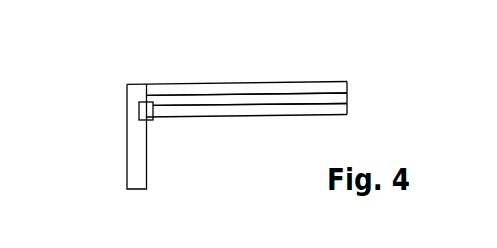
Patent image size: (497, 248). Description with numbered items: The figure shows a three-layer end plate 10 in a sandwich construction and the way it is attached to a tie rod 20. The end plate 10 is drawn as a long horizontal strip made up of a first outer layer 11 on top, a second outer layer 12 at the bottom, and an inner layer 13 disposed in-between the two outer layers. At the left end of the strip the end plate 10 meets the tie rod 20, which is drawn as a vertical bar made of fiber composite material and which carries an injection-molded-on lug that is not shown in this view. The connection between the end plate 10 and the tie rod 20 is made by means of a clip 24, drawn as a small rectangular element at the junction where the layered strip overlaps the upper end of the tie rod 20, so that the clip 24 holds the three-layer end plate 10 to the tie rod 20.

The end plate 10 is at (258, 65).
The first outer layer 11 is at (347, 85).
The second outer layer 12 is at (347, 113).
The inner layer 13 is at (348, 100).
The tie rod 20 is at (127, 157).
The clip 24 is at (140, 107).